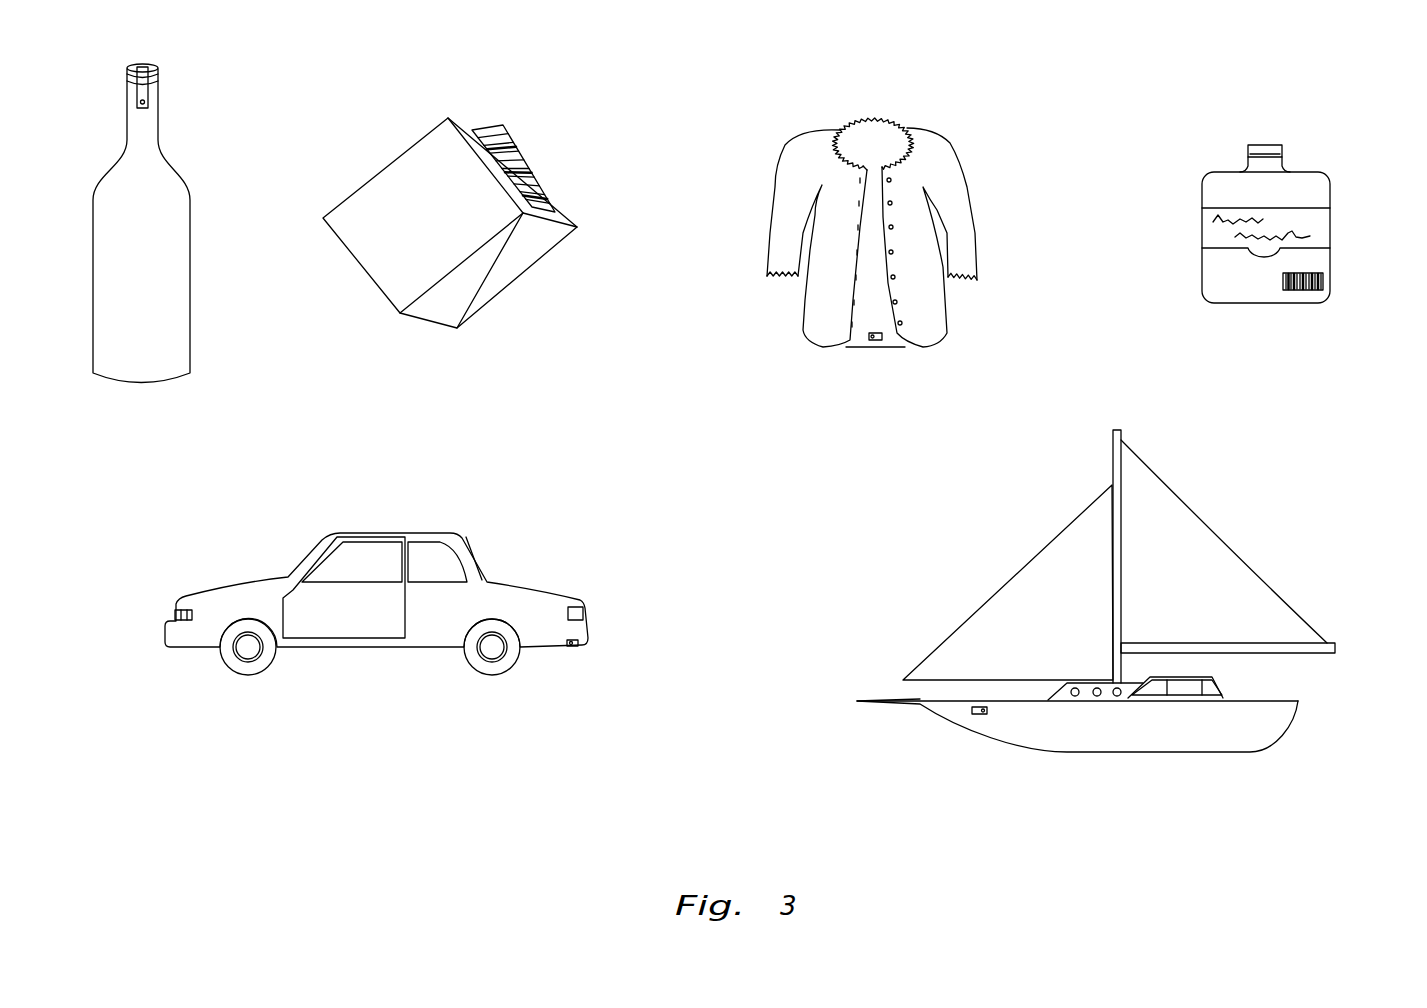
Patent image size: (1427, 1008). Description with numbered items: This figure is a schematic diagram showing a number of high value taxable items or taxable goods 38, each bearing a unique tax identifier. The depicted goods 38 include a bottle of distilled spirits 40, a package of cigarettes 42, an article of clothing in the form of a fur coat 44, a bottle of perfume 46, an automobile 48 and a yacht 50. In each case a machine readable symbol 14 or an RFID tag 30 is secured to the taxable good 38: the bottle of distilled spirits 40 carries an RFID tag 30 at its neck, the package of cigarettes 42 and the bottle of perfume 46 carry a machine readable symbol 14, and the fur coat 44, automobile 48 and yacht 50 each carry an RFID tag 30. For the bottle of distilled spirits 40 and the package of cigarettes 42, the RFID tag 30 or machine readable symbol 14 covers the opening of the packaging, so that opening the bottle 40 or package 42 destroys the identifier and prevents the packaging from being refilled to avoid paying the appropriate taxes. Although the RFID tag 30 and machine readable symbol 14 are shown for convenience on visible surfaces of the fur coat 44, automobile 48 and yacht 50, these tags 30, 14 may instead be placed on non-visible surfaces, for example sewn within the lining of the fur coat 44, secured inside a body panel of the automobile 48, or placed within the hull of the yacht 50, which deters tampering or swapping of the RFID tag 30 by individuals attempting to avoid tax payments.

The machine readable symbol 14 is at (534, 176).
The RFID tag 30 is at (138, 102).
The taxable goods 38 is at (407, 827).
The bottle of distilled spirits 40 is at (193, 307).
The package of cigarettes 42 is at (510, 277).
The fur coat 44 is at (967, 165).
The bottle of perfume 46 is at (1330, 192).
The automobile 48 is at (532, 588).
The yacht 50 is at (1198, 753).